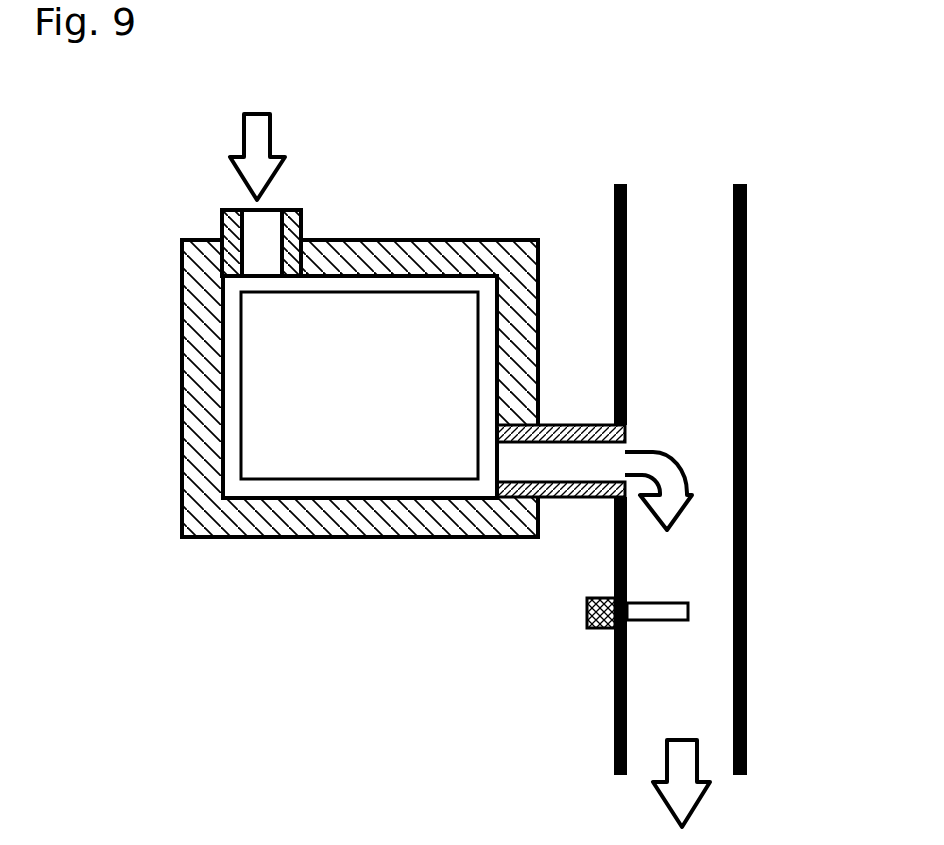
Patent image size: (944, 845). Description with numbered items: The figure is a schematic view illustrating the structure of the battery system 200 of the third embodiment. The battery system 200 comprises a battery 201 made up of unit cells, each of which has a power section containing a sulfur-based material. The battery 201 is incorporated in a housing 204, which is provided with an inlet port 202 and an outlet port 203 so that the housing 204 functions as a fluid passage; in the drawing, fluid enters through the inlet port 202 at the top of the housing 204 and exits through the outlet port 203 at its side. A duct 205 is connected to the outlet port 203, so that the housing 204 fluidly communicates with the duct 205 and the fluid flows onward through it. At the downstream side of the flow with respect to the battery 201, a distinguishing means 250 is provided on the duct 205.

The battery system 200 is at (464, 96).
The battery 201 is at (255, 425).
The inlet port 202 is at (222, 225).
The outlet port 203 is at (567, 430).
The housing 204 is at (215, 568).
The duct 205 is at (763, 445).
The distinguishing means 250 is at (578, 610).